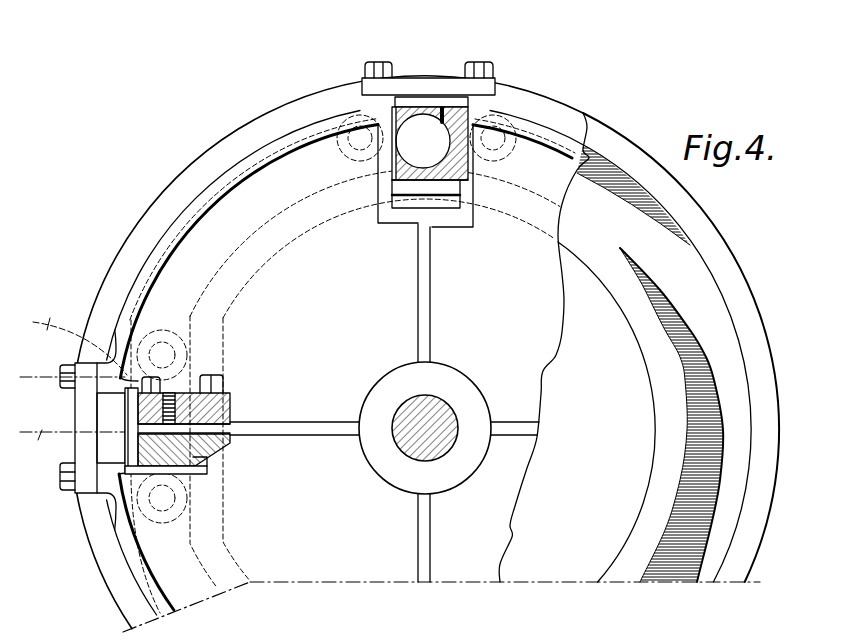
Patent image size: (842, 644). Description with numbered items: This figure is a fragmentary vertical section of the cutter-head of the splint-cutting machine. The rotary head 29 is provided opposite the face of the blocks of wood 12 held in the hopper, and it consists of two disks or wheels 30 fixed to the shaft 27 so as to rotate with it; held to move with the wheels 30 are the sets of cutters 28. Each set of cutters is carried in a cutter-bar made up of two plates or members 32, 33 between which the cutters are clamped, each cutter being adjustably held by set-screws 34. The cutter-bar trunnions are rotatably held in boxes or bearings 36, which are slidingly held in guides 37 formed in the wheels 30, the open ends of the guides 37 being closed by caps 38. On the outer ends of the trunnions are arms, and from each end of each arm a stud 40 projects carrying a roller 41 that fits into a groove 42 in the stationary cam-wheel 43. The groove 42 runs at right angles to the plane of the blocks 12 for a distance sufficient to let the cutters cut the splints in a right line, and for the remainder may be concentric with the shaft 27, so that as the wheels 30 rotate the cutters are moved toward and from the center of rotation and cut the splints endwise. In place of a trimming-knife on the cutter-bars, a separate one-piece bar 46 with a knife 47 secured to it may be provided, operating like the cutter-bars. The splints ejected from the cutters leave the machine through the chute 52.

The blocks of wood 12 is at (32, 450).
The shaft 27 is at (407, 447).
The sets of cutters 28 is at (133, 430).
The rotary head 29 is at (330, 352).
The disks or wheels 30 is at (265, 150).
The plate or member 32 is at (232, 408).
The plate or member 33 is at (233, 443).
The set-screws 34 is at (170, 393).
The boxes or bearings 36 is at (207, 477).
The guides 37 is at (110, 470).
The caps 38 is at (83, 362).
The stud 40 is at (468, 164).
The rollers 41 is at (392, 168).
The groove 42 is at (728, 320).
The cams or cam-wheels 43 is at (712, 226).
The bar 46 is at (466, 182).
The knife 47 is at (462, 103).
The chute 52 is at (80, 346).